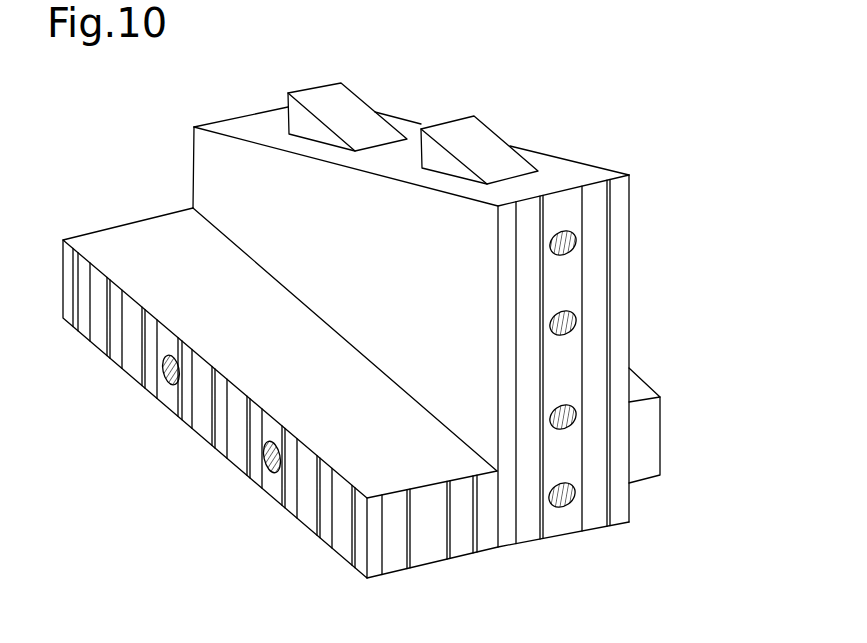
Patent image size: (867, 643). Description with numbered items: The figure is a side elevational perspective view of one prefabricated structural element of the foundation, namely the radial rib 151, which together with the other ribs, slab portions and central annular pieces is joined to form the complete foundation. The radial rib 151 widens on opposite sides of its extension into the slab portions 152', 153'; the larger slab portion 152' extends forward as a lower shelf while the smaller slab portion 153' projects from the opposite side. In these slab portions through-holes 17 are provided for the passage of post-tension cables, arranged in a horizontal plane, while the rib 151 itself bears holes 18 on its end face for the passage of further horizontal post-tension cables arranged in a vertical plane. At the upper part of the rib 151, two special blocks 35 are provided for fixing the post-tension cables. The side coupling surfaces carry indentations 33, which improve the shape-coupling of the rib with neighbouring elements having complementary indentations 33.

The radial rib 151 is at (626, 140).
The slab portion 152' is at (280, 360).
The slab portion 153' is at (663, 398).
The special blocks 35 is at (355, 113).
The indentations 33 is at (132, 360).
The through-holes 17 is at (268, 452).
The holes 18 is at (560, 507).